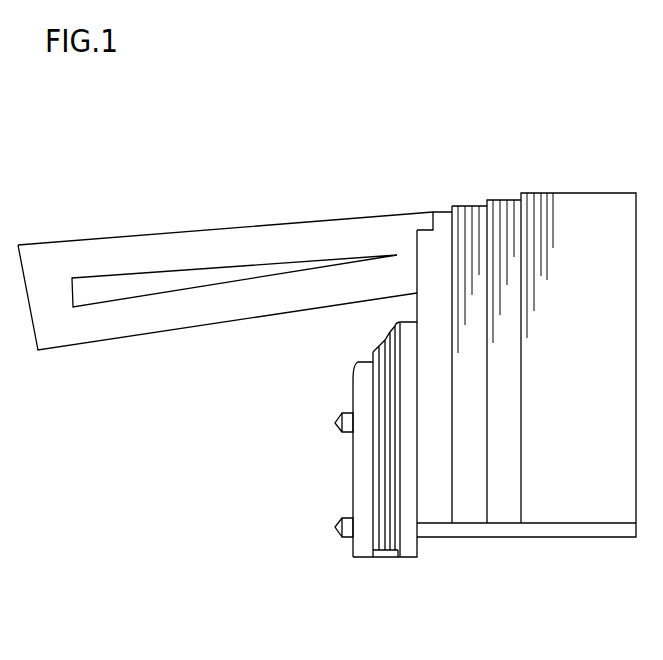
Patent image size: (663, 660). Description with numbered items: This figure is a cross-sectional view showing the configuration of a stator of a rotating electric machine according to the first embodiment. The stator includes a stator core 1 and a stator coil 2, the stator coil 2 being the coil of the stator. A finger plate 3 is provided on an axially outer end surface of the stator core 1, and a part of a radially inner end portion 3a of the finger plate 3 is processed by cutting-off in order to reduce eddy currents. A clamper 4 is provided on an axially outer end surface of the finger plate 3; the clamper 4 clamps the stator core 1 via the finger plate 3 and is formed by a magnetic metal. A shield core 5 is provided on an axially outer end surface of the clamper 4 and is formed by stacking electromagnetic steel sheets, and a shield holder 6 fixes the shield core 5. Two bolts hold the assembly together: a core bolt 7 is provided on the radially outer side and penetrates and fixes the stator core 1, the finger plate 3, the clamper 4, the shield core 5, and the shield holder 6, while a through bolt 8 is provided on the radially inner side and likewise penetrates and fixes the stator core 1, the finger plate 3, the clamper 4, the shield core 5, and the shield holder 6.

The stator core 1 is at (576, 208).
The stator coil 2 is at (282, 240).
The finger plate 3 is at (430, 483).
The radially inner end portion 3a is at (446, 221).
The clamper 4 is at (410, 544).
The shield core 5 is at (383, 557).
The shield holder 6 is at (357, 542).
The core bolt 7 is at (335, 528).
The through bolt 8 is at (335, 424).